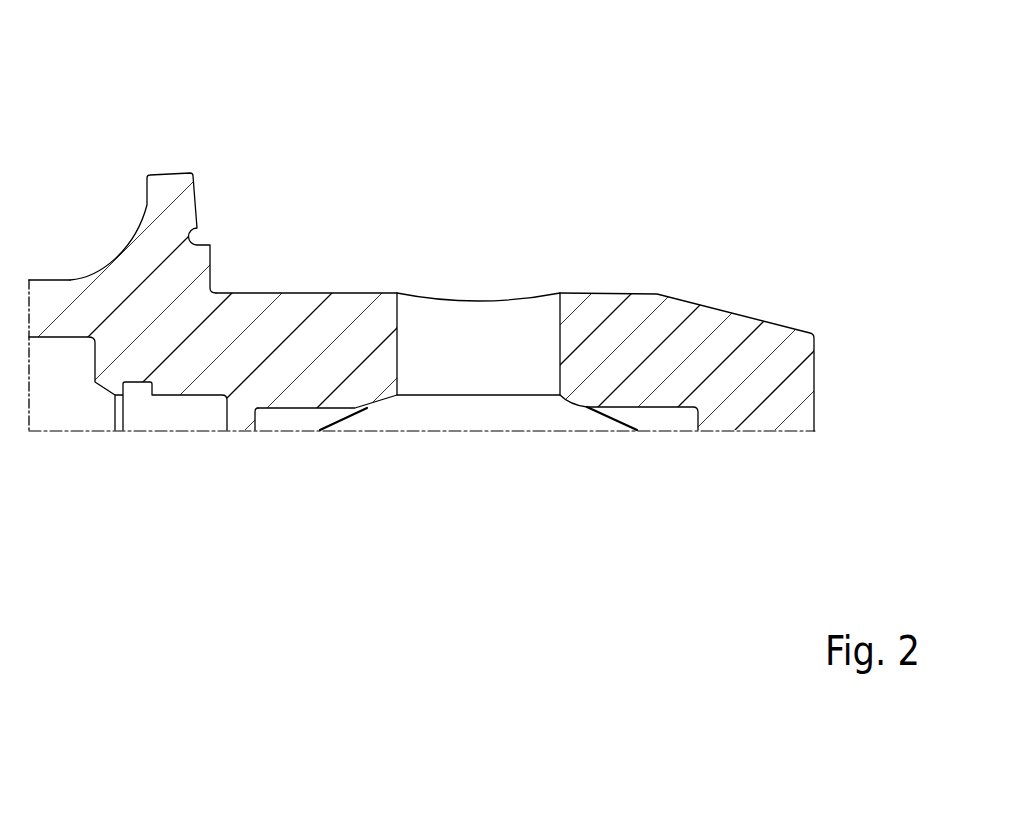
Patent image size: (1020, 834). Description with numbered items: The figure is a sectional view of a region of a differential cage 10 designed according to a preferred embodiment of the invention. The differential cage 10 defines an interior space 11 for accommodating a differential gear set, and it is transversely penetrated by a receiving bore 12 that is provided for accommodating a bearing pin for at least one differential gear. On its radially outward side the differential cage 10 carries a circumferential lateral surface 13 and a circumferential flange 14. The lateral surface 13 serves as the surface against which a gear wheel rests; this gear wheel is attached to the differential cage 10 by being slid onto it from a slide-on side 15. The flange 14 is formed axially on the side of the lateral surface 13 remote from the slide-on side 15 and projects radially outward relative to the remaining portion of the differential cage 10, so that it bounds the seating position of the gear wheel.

The differential cage 10 is at (107, 117).
The interior space 11 is at (515, 410).
The receiving bore 12 is at (462, 295).
The circumferential lateral surface 13 is at (292, 293).
The circumferential flange 14 is at (163, 197).
The slide-on side 15 is at (830, 297).